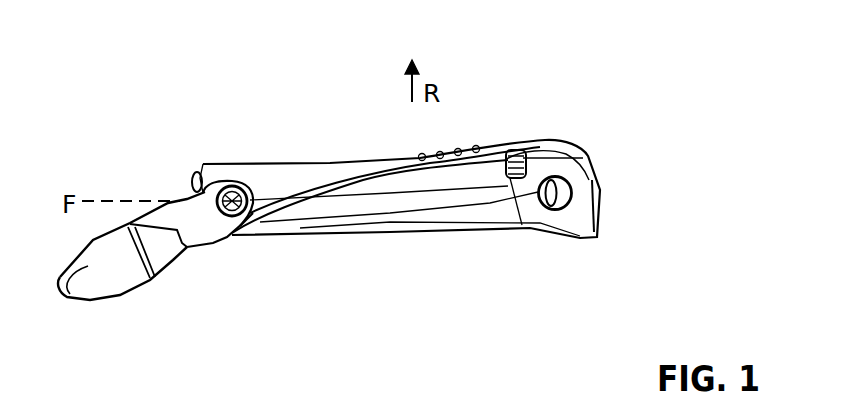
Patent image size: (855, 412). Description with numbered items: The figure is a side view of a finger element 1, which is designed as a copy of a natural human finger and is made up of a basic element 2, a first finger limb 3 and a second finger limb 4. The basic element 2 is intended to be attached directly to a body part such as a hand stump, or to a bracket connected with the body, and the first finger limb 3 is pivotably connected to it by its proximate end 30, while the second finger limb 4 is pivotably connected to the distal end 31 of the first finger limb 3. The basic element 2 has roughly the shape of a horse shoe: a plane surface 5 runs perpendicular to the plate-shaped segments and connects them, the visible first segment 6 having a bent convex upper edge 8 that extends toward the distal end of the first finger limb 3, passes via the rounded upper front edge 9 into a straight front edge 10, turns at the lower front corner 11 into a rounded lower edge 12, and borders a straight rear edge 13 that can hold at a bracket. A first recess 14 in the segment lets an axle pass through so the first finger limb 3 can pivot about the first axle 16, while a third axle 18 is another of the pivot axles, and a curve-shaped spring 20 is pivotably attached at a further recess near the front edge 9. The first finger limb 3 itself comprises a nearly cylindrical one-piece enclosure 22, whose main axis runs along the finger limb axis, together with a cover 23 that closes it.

The finger element 1 is at (323, 145).
The basic element 2 is at (582, 144).
The first finger limb 3 is at (245, 165).
The second finger limb 4 is at (173, 266).
The plane surface 5 is at (600, 208).
The first segment 6 is at (577, 214).
The upper edge 8 is at (584, 158).
The upper front edge 9 is at (514, 143).
The front edge 10 is at (520, 215).
The lower front corner 11 is at (528, 220).
The lower edge 12 is at (558, 225).
The rear edge 13 is at (594, 229).
The first recess 14 is at (568, 188).
The first axle 16 is at (564, 163).
The third axle 18 is at (515, 170).
The spring 20 is at (302, 198).
The enclosure 22 is at (364, 228).
The cover 23 is at (195, 176).
The proximate end of the first finger limb 30 is at (556, 177).
The distal end of the first finger limb 31 is at (205, 168).